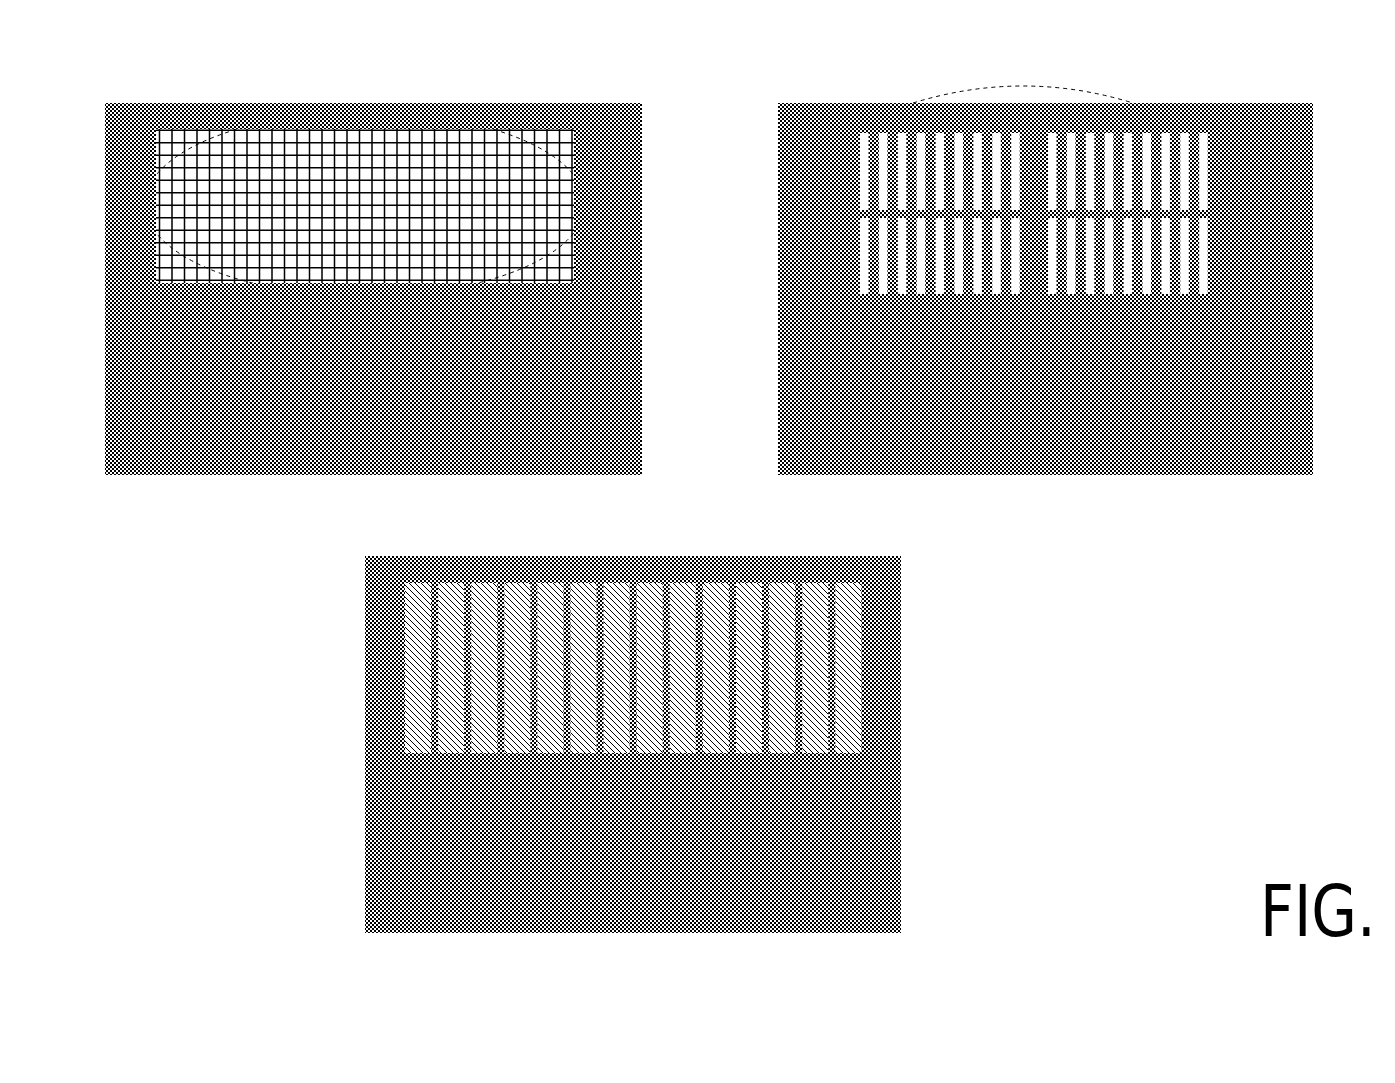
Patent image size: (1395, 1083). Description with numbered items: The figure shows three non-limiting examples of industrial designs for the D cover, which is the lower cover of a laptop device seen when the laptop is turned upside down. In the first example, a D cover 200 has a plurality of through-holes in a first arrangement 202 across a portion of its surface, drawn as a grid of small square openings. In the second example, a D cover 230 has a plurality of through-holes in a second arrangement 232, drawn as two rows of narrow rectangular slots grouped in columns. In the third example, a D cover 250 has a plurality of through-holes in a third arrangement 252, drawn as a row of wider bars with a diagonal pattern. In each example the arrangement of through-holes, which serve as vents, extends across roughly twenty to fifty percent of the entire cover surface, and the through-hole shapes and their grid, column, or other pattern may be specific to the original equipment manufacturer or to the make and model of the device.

The D cover 200 is at (50, 92).
The first arrangement 202 is at (445, 124).
The D cover 230 is at (750, 90).
The second arrangement 232 is at (1141, 97).
The D cover 250 is at (268, 698).
The third arrangement 252 is at (876, 621).